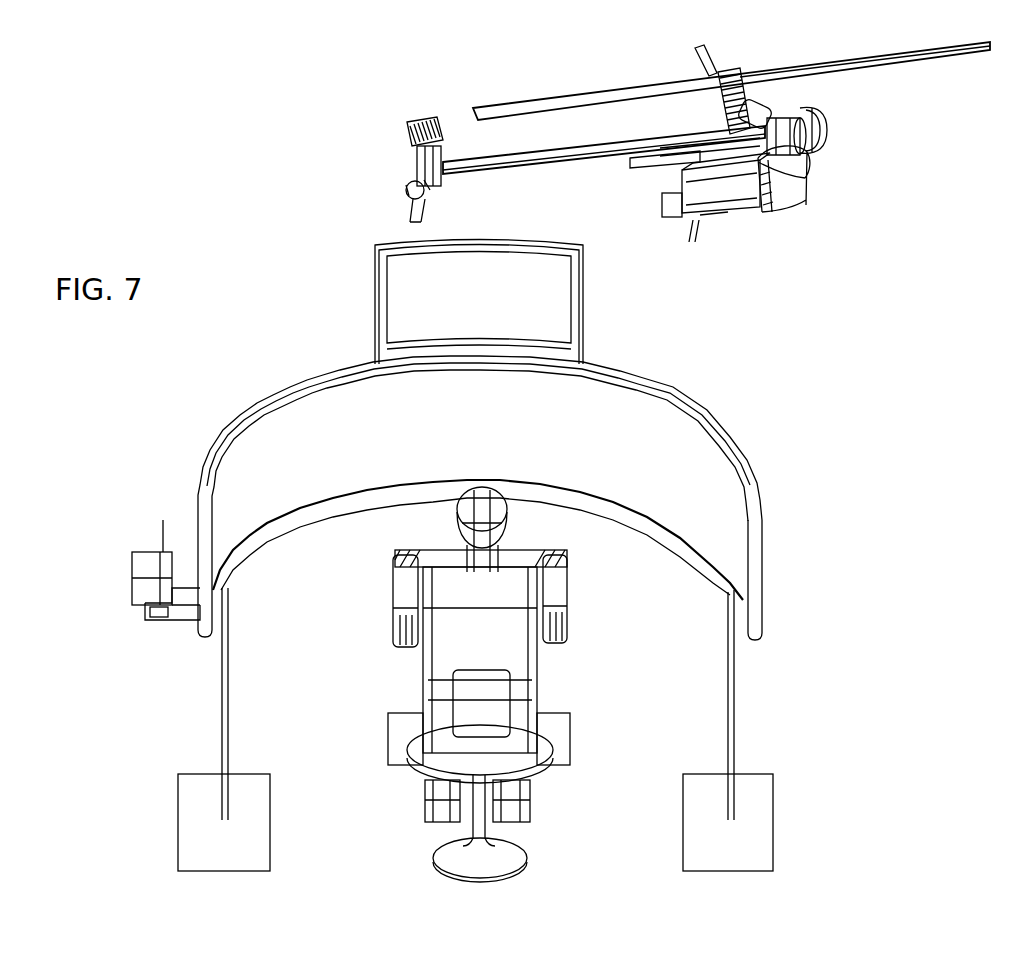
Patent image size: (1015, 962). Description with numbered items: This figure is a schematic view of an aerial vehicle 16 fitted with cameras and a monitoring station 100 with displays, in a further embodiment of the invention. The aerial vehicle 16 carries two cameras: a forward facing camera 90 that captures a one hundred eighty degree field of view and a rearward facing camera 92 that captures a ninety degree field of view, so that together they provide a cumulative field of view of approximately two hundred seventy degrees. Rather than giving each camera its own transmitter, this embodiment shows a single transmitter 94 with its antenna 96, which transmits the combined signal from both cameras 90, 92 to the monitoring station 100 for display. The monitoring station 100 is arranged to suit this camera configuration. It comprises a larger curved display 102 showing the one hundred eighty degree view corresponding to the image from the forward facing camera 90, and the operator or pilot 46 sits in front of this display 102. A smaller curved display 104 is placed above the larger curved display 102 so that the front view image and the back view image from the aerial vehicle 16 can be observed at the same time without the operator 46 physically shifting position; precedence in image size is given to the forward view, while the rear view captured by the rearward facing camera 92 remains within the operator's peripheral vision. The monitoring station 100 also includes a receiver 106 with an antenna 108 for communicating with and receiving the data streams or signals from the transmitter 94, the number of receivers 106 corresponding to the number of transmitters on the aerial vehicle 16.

The aerial vehicle 16 is at (546, 66).
The operator or pilot 46 is at (522, 664).
The forward facing camera 90 is at (805, 180).
The rearward facing camera 92 is at (661, 200).
The transmitter 94 is at (720, 222).
The antenna 96 is at (702, 242).
The monitoring station 100 is at (136, 426).
The larger curved display 102 is at (299, 419).
The smaller curved display 104 is at (397, 298).
The receiver 106 is at (140, 596).
The antenna 108 is at (163, 532).